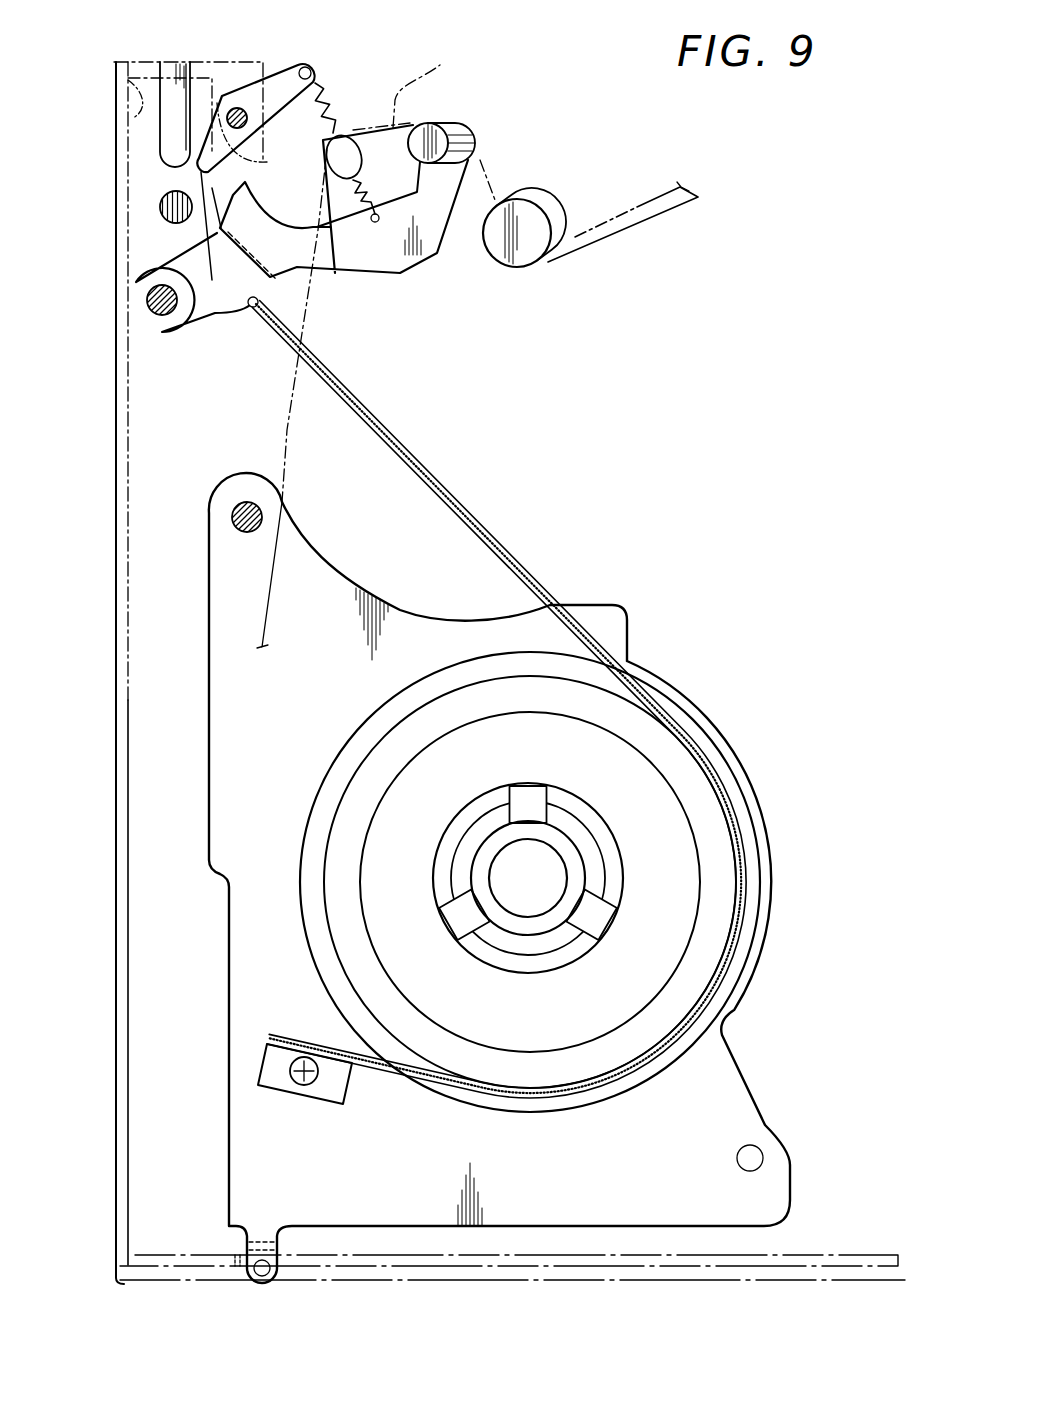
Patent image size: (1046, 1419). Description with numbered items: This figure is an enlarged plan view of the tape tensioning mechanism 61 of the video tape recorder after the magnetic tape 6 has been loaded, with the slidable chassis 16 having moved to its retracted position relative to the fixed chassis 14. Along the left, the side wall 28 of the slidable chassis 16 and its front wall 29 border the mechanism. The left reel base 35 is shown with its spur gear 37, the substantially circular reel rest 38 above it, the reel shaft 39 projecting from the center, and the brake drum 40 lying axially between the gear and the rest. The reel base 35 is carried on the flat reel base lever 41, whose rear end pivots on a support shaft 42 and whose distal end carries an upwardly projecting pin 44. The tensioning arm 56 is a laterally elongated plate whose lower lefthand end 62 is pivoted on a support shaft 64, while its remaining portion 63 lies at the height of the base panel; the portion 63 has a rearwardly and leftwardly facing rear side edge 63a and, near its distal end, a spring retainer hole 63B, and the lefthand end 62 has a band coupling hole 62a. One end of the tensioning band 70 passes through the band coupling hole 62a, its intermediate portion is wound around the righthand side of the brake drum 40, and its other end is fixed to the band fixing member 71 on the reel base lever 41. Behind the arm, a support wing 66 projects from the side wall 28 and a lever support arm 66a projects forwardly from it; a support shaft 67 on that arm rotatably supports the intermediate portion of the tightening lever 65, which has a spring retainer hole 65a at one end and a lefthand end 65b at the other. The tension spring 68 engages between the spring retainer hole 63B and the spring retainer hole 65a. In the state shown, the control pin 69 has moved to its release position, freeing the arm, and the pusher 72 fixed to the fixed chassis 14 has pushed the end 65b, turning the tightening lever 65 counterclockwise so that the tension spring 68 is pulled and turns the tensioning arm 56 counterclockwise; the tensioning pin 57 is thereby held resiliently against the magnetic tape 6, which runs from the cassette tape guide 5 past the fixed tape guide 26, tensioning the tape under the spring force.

The tape guide 5 is at (330, 263).
The magnetic tape 6 is at (290, 483).
The fixed chassis 14 is at (460, 1282).
The slidable chassis 16 is at (116, 645).
The fixed tape guide 26 is at (530, 258).
The side wall 28 is at (128, 975).
The front wall 29 is at (173, 1253).
The reel base 35 is at (362, 732).
The spur gear 37 is at (342, 774).
The reel rest 38 is at (387, 833).
The reel shaft 39 is at (458, 918).
The brake drum 40 is at (345, 932).
The reel base lever 41 is at (727, 1090).
The support shaft 42 is at (233, 514).
The pin 44 is at (762, 1158).
The tensioning arm 56 is at (435, 263).
The tensioning pin 57 is at (440, 125).
The tape tensioning mechanism 61 is at (593, 428).
The lefthand end 62 is at (188, 318).
The band coupling hole 62a is at (290, 373).
The portion 63 is at (397, 262).
The rear side edge 63a is at (249, 310).
The spring retainer hole 63B is at (371, 224).
The support shaft 64 is at (160, 316).
The tightening lever 65 is at (318, 72).
The spring retainer hole 65a is at (304, 67).
The lefthand end 65b is at (213, 305).
The support wing 66 is at (127, 107).
The lever support arm 66a is at (252, 163).
The support shaft 67 is at (245, 126).
The tension spring 68 is at (333, 110).
The control pin 69 is at (170, 221).
The tensioning band 70 is at (478, 527).
The band fixing member 71 is at (333, 1094).
The pusher 72 is at (170, 138).